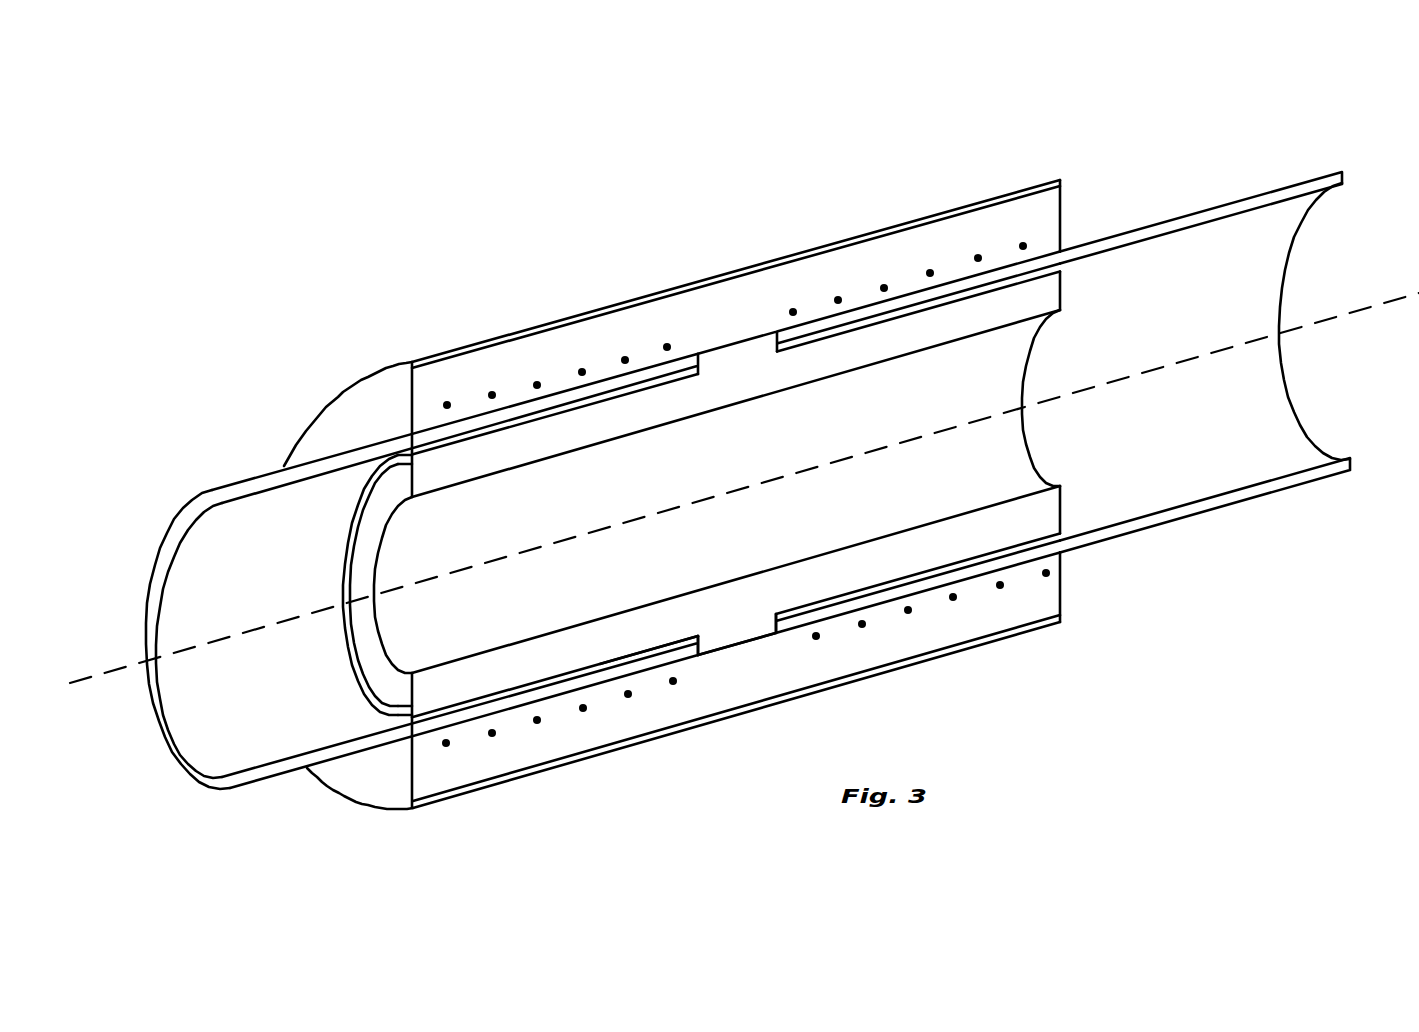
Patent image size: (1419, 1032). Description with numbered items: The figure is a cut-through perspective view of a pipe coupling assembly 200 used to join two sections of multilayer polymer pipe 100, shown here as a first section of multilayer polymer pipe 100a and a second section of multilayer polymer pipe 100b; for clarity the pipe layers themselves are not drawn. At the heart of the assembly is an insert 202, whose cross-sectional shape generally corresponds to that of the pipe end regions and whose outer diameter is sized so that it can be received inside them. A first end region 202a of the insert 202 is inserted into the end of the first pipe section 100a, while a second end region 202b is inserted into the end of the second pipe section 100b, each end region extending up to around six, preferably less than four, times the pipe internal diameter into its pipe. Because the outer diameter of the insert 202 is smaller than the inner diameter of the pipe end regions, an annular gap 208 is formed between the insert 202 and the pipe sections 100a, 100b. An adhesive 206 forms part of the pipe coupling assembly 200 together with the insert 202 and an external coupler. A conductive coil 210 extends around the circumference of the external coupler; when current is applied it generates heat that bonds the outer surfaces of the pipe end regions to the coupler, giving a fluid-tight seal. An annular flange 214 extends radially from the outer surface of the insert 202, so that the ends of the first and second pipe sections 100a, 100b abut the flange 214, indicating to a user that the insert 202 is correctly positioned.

The multilayer polymer pipe 100 is at (1245, 500).
The first section of multilayer polymer pipe 100a is at (515, 410).
The second section of multilayer polymer pipe 100b is at (925, 295).
The pipe coupling assembly 200 is at (1094, 172).
The insert 202 is at (805, 515).
The first end region of the insert 202a is at (507, 665).
The second end region of the insert 202b is at (985, 530).
The adhesive 206 is at (530, 355).
The annular gap 208 is at (625, 655).
The conductive coil 210 is at (667, 347).
The annular flange 214 is at (723, 635).